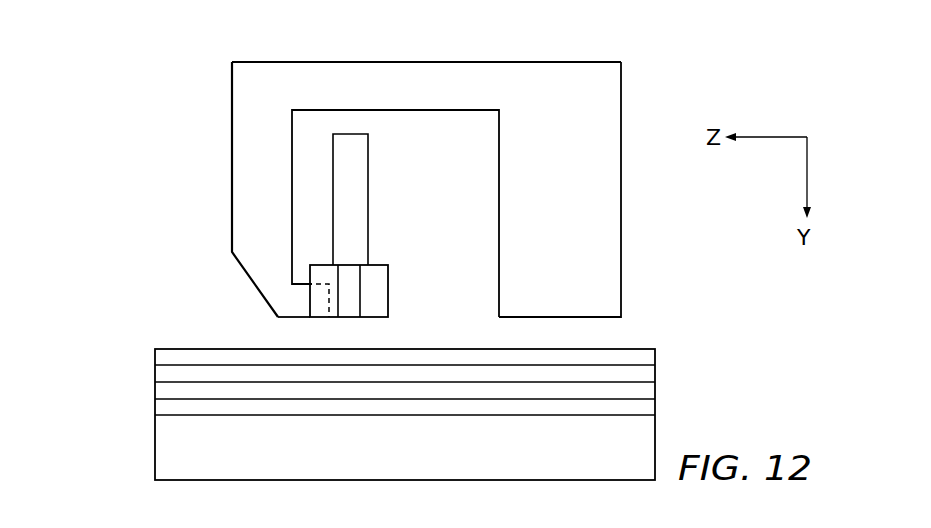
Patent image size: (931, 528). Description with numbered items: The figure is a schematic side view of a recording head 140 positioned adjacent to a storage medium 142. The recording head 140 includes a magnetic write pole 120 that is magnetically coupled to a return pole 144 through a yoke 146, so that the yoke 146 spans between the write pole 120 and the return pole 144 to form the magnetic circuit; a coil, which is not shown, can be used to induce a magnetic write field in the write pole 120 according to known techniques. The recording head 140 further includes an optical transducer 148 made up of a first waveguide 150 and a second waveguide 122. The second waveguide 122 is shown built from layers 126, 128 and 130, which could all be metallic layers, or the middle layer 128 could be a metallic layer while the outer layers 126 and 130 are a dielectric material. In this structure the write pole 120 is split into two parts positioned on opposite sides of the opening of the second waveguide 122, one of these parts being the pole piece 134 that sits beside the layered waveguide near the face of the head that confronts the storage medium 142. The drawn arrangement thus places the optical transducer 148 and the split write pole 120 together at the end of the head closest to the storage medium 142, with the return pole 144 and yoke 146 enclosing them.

The magnetic write pole 120 is at (250, 260).
The second waveguide 122 is at (408, 251).
The waveguide layer 126 is at (332, 320).
The waveguide layer 128 is at (350, 310).
The waveguide layer 130 is at (387, 292).
The pole piece 134 is at (293, 302).
The recording head 140 is at (672, 87).
The storage medium 142 is at (130, 414).
The return pole 144 is at (606, 248).
The yoke 146 is at (307, 67).
The optical transducer 148 is at (394, 207).
The first waveguide 150 is at (357, 157).